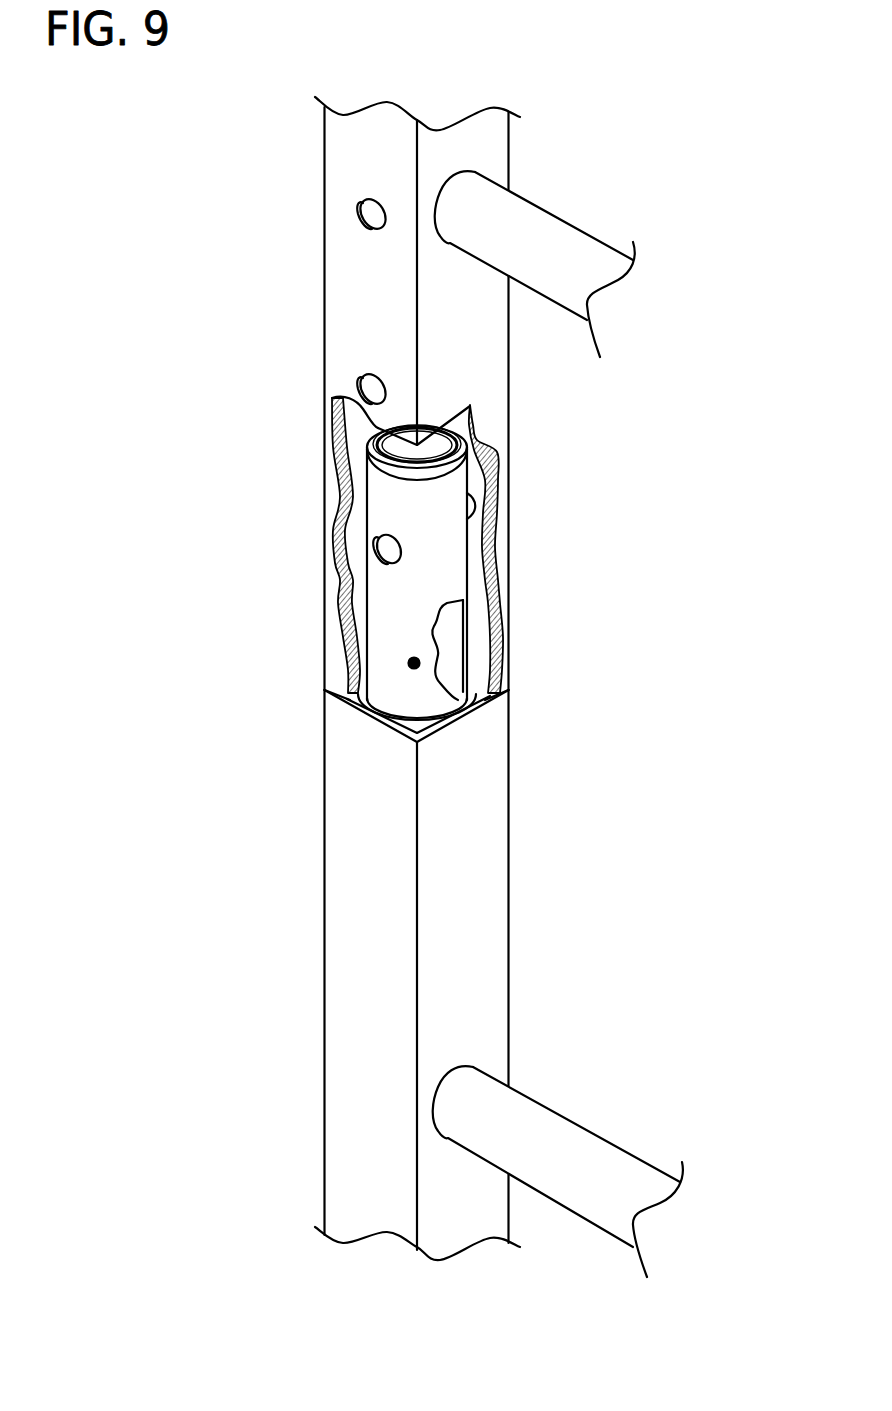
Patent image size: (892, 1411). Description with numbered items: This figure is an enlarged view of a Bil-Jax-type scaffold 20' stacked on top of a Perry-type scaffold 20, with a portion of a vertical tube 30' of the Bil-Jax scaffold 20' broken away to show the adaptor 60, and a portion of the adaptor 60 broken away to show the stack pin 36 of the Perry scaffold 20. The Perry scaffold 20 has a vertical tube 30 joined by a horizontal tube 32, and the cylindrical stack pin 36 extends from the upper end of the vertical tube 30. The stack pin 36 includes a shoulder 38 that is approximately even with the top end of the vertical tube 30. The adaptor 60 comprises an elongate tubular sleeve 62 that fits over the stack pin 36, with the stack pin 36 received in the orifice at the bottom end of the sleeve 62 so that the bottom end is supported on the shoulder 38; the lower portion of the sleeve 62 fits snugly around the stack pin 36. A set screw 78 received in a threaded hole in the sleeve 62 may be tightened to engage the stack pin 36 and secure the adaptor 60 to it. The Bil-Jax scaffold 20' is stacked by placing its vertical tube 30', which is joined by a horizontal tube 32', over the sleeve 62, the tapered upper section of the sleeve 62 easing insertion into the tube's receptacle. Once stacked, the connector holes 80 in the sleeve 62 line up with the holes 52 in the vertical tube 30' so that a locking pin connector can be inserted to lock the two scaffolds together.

The Perry-type scaffold 20 is at (516, 1106).
The Bil-Jax-type scaffold 20' is at (333, 210).
The vertical tube 30 is at (368, 970).
The vertical tube 30' is at (354, 400).
The horizontal tube 32 is at (575, 1171).
The horizontal tube 32' is at (536, 246).
The stack pin 36 is at (452, 650).
The shoulder 38 is at (378, 703).
The holes 52 is at (343, 218).
The adaptor 60 is at (445, 497).
The tubular sleeve 62 is at (440, 557).
The set screw 78 is at (410, 664).
The connector holes 80 is at (375, 556).